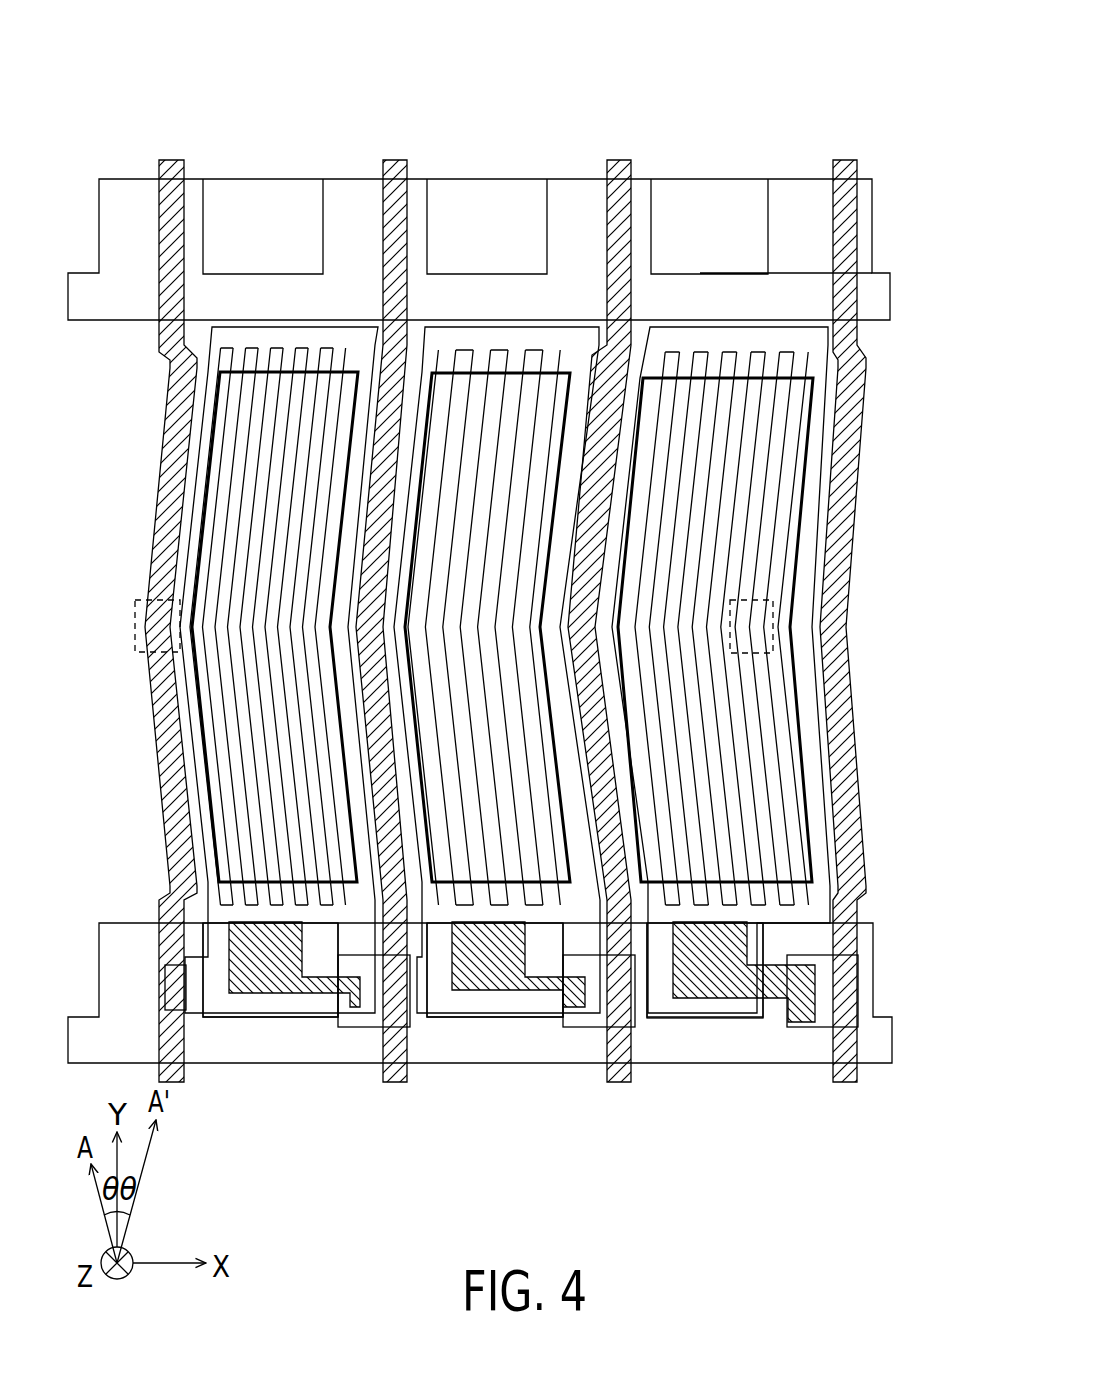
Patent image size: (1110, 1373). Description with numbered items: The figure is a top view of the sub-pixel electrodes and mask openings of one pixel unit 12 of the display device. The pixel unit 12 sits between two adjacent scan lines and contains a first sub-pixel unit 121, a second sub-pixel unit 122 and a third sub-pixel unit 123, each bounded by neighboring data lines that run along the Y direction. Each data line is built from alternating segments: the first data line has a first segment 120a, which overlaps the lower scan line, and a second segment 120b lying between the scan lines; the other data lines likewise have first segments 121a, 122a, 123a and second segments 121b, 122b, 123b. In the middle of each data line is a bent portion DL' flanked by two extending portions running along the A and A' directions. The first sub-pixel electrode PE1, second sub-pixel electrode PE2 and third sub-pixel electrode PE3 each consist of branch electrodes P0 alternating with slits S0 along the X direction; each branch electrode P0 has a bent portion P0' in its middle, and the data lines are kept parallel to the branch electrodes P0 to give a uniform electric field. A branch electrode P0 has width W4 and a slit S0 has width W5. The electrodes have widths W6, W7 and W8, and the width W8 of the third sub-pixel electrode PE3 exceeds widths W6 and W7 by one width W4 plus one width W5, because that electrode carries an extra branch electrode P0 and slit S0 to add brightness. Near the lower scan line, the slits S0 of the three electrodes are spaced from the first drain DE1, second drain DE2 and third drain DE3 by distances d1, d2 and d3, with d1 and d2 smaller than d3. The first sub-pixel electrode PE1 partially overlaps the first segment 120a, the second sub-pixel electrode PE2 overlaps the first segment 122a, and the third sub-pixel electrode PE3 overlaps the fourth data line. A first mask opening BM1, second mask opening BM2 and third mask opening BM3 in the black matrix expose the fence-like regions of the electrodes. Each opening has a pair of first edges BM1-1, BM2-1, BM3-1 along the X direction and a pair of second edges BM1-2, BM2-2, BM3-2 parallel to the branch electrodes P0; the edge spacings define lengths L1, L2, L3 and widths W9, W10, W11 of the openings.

The pixel unit 12 is at (834, 60).
The first sub-pixel unit 121 is at (279, 537).
The second sub-pixel unit 122 is at (497, 537).
The third sub-pixel unit 123 is at (781, 537).
The first segment 120a is at (170, 988).
The second segment 120b is at (168, 742).
The first segment 121a is at (397, 992).
The second segment 121b is at (415, 795).
The first segment 122a is at (620, 992).
The second segment 122b is at (605, 822).
The first segment 123a is at (840, 935).
The second segment 123b is at (848, 796).
The first sub-pixel electrode PE1 is at (223, 352).
The second sub-pixel electrode PE2 is at (445, 352).
The third sub-pixel electrode PE3 is at (675, 352).
The first mask opening BM1 is at (273, 905).
The second mask opening BM2 is at (517, 905).
The third mask opening BM3 is at (730, 905).
The first edges BM1-1 is at (277, 350).
The second edges BM1-2 is at (197, 577).
The first edges BM2-1 is at (502, 350).
The second edges BM2-2 is at (560, 822).
The first edges BM3-1 is at (728, 350).
The second edges BM3-2 is at (795, 580).
The first drain DE1 is at (247, 992).
The second drain DE2 is at (475, 992).
The third drain DE3 is at (692, 992).
The bent portion DL' is at (123, 624).
The branch electrode P0 is at (845, 497).
The bent portion P0' is at (821, 629).
The slit S0 is at (755, 452).
The width of branch electrode W4 is at (740, 467).
The width of slit W5 is at (728, 407).
The width of first sub-pixel electrode W6 is at (353, 516).
The width of second sub-pixel electrode W7 is at (568, 516).
The width of third sub-pixel electrode W8 is at (810, 516).
The width of first mask opening W9 is at (349, 437).
The width of second mask opening W10 is at (562, 437).
The width of third mask opening W11 is at (808, 437).
The length of first mask opening L1 is at (233, 878).
The length of second mask opening L2 is at (446, 878).
The length of third mask opening L3 is at (656, 878).
The distance d1 is at (246, 886).
The distance d2 is at (492, 886).
The distance d3 is at (702, 886).